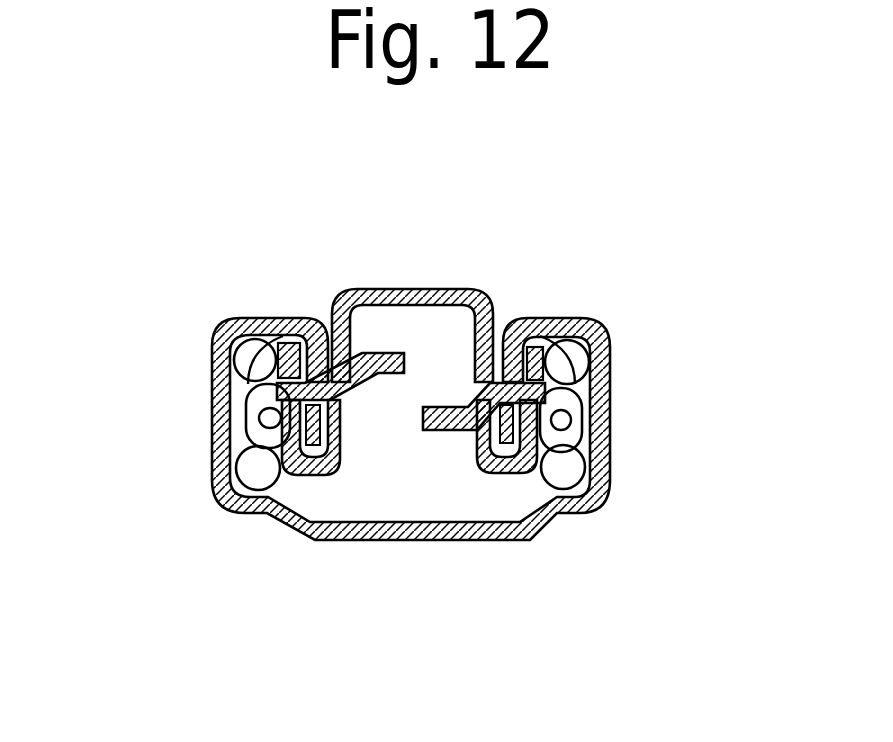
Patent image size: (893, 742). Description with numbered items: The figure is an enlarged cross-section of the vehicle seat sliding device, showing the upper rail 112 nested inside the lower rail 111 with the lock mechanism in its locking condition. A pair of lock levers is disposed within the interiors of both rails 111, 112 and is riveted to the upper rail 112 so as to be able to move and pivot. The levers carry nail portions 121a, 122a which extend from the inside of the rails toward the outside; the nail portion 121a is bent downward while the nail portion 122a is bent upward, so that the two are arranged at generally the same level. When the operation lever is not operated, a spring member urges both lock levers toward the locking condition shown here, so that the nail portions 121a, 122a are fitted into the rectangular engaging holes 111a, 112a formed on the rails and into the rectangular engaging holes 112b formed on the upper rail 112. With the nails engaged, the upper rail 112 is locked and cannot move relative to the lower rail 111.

The lower rail 111 is at (490, 532).
The engaging hole 111a is at (303, 322).
The upper rail 112 is at (470, 297).
The engaging hole 112a is at (365, 352).
The engaging hole 112b is at (282, 410).
The nail portion 121a is at (258, 396).
The nail portion 122a is at (562, 413).